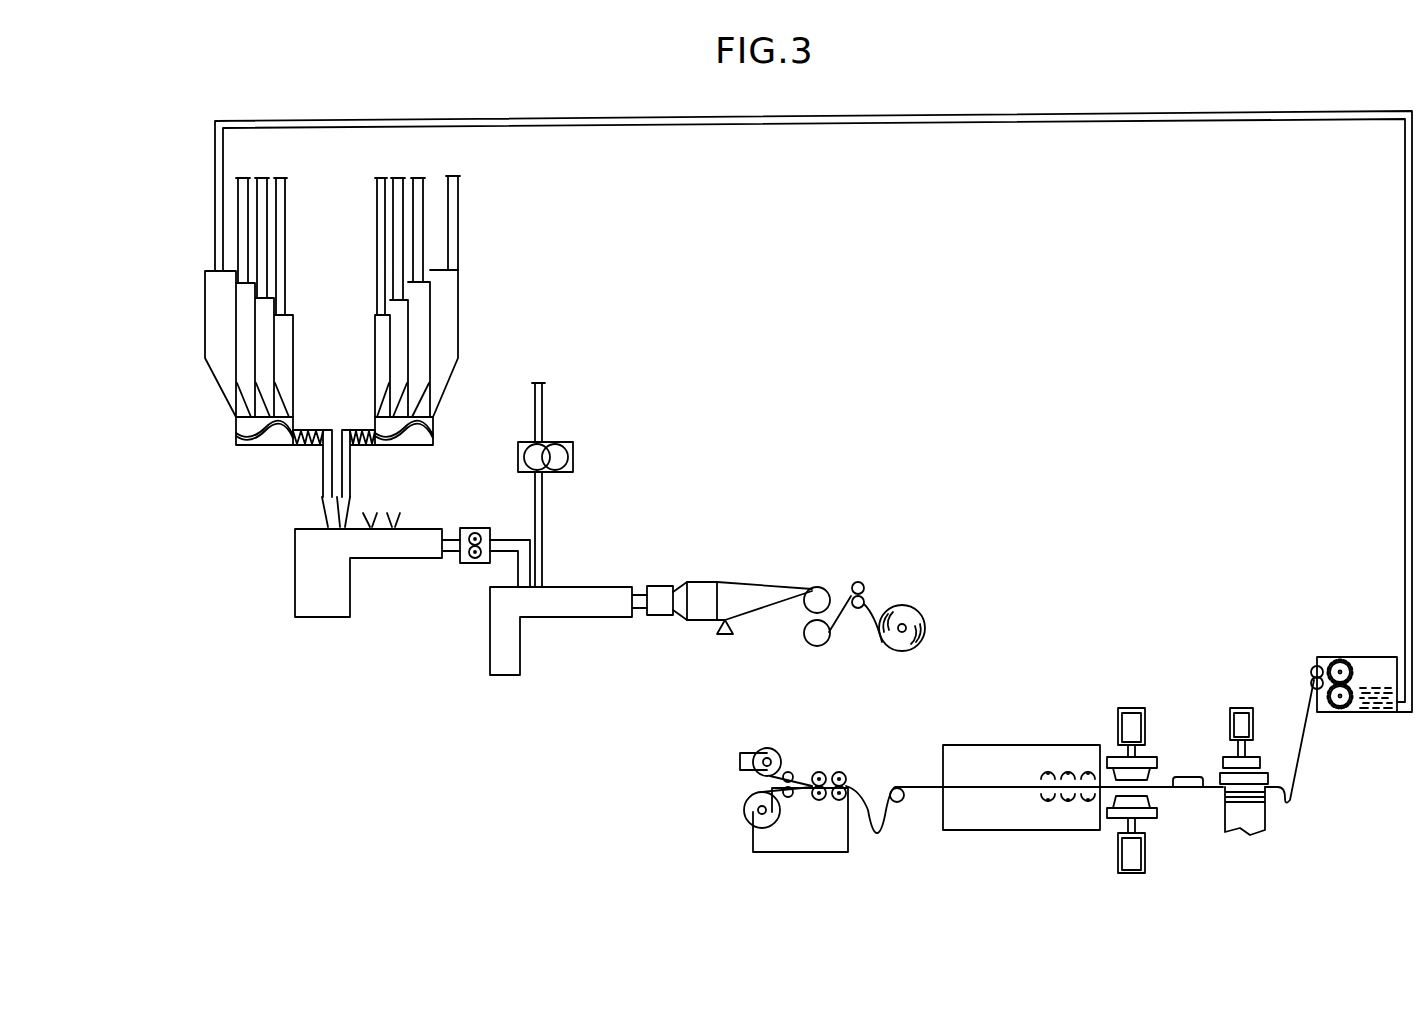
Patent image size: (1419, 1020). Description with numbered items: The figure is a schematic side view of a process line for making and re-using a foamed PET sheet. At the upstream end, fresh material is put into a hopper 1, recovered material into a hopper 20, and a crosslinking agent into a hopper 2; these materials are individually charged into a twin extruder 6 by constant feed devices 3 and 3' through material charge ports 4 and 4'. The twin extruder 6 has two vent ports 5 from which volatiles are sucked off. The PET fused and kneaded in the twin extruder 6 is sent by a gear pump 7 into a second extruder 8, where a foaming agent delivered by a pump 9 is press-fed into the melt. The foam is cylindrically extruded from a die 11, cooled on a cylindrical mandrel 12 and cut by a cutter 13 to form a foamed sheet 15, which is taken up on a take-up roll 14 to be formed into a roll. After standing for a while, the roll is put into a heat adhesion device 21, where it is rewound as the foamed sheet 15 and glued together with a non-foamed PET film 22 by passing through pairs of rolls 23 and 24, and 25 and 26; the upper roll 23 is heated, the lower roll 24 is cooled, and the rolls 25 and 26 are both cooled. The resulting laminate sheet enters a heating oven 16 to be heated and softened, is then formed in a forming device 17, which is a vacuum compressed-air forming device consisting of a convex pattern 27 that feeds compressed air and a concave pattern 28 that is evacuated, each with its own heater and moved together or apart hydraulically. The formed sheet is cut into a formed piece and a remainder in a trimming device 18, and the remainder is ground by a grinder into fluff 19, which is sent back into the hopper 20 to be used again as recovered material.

The hopper 1 is at (458, 312).
The hopper 2 is at (293, 342).
The constant feed device 3 is at (379, 411).
The constant feed device 3' is at (230, 425).
The material charge port 4 is at (370, 492).
The material charge port 4' is at (312, 478).
The vent port 5 is at (390, 512).
The twin extruder 6 is at (333, 608).
The gear pump 7 is at (470, 562).
The second extruder 8 is at (512, 668).
The pump 9 is at (518, 456).
The die 11 is at (653, 590).
The cylindrical mandrel 12 is at (703, 588).
The cutter 13 is at (722, 634).
The take-up roll 14 is at (812, 635).
The foamed sheet 15 is at (893, 612).
The heating oven 16 is at (945, 880).
The forming device 17 is at (1165, 880).
The trimming device 18 is at (1215, 880).
The fluff 19 is at (1380, 705).
The hopper 20 is at (220, 311).
The heat adhesion device 21 is at (797, 845).
The non-foamed PET film 22 is at (767, 750).
The upper roll 23 is at (818, 771).
The lower roll 24 is at (817, 800).
The roll 25 is at (846, 775).
The roll 26 is at (843, 802).
The convex pattern 27 is at (1140, 797).
The concave pattern 28 is at (1140, 770).